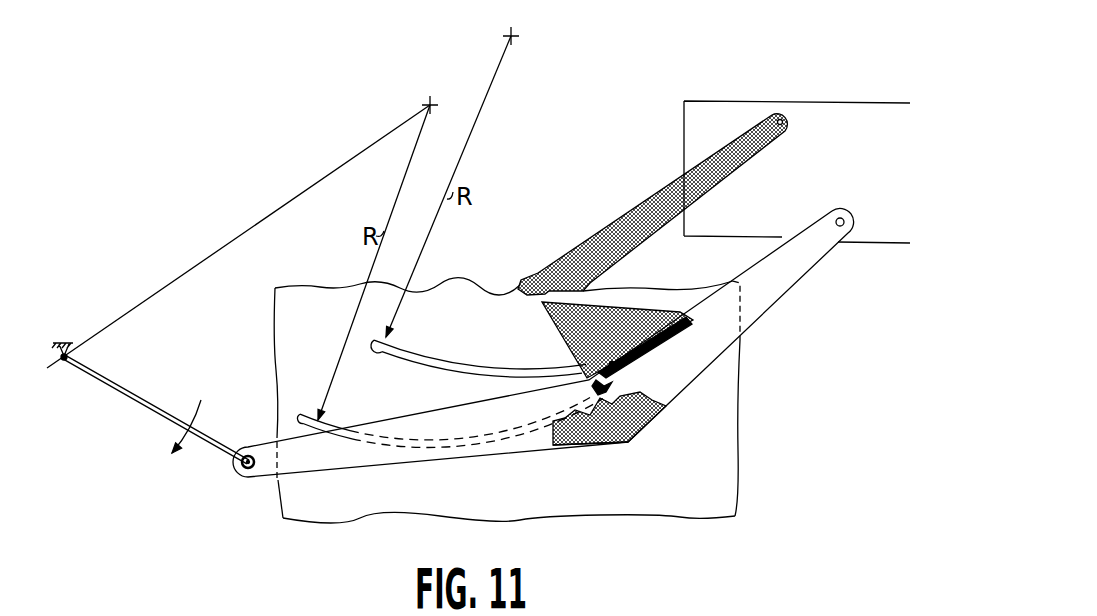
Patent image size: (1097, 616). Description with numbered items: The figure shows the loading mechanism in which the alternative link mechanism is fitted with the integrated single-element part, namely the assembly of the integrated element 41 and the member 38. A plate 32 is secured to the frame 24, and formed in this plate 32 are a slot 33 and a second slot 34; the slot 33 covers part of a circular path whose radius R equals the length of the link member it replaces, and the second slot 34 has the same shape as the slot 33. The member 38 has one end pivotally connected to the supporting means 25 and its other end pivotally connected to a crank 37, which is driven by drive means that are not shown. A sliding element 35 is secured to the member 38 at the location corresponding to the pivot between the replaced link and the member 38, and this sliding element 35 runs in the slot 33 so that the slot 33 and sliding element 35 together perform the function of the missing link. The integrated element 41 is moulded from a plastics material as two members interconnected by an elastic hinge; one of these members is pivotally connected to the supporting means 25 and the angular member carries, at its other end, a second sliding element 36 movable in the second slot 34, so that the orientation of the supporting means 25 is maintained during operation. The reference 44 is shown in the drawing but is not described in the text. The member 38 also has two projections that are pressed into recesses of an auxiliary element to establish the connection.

The frame 24 is at (57, 349).
The supporting means 25 is at (826, 116).
The plate 32 is at (715, 508).
The slot 33 is at (378, 436).
The second slot 34 is at (440, 363).
The sliding element 35 is at (630, 443).
The second sliding element 36 is at (697, 330).
The crank 37 is at (150, 398).
The member 38 is at (330, 462).
The integrated element 41 is at (643, 203).
The friction pads 44 is at (664, 408).